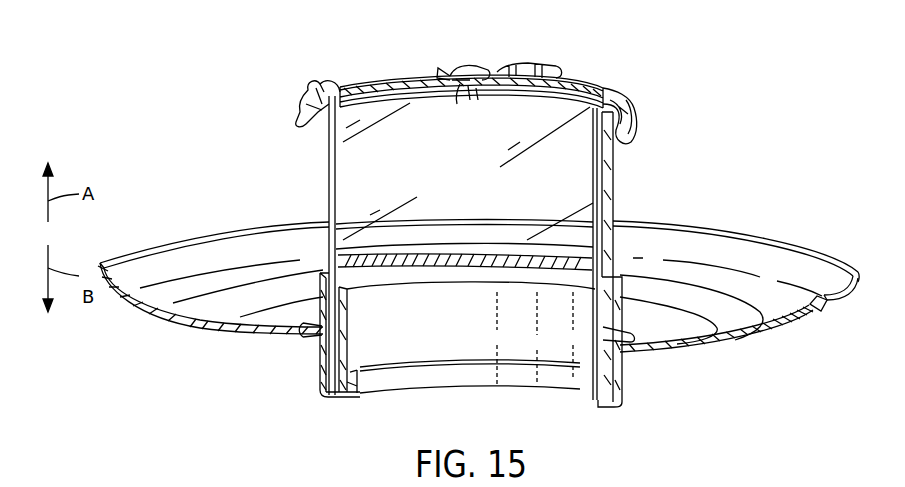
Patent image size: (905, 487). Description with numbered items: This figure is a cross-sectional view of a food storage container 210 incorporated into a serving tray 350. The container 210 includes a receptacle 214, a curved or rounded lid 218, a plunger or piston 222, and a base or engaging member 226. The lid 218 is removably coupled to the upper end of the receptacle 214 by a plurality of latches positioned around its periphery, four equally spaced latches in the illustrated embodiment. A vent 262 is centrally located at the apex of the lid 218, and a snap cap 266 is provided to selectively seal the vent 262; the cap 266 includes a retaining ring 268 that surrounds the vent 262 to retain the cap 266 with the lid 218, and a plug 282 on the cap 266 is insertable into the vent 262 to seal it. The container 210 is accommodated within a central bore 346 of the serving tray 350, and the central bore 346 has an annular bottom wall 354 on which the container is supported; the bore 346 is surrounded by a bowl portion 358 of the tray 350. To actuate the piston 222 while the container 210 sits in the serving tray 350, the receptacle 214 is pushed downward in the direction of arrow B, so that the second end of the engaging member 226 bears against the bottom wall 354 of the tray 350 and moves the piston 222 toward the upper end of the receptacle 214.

The container 210 is at (655, 130).
The receptacle 214 is at (607, 183).
The lid 218 is at (587, 88).
The piston 222 is at (568, 259).
The engaging member 226 is at (326, 358).
The vent 262 is at (475, 98).
The cap 266 is at (473, 67).
The retaining ring 268 is at (443, 68).
The plug 282 is at (458, 103).
The central bore 346 is at (340, 320).
The serving tray 350 is at (184, 242).
The bottom wall 354 is at (342, 397).
The bowl portion 358 is at (744, 273).